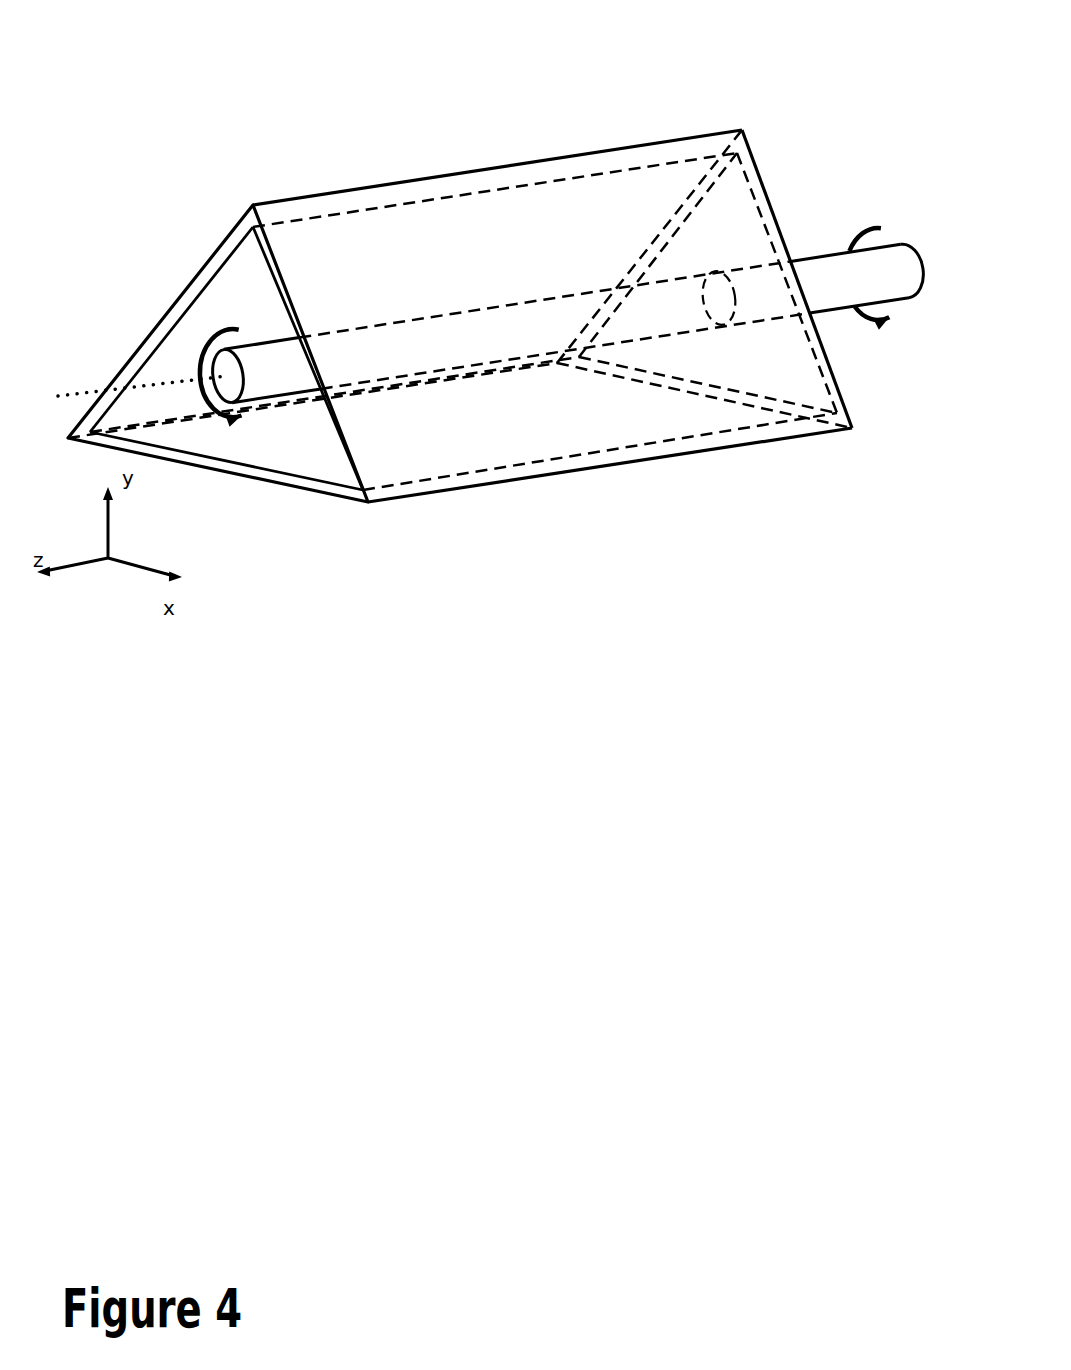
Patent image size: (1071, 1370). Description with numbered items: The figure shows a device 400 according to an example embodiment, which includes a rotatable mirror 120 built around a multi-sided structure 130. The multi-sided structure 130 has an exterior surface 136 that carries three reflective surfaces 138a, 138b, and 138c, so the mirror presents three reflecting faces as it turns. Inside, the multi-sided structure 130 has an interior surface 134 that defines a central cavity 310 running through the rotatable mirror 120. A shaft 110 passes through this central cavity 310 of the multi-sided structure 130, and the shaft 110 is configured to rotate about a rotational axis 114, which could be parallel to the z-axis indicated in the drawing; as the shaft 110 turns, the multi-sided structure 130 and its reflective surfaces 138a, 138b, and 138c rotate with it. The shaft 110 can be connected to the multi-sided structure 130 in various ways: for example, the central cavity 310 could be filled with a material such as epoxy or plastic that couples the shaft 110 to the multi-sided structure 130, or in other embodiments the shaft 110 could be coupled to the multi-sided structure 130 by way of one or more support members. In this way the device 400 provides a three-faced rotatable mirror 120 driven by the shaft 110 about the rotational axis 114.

The device 400 is at (865, 92).
The rotatable mirror 120 is at (492, 128).
The multi-sided structure 130 is at (437, 175).
The exterior surface 136 is at (162, 317).
The reflective surface 138a is at (545, 193).
The reflective surface 138b is at (200, 248).
The reflective surface 138c is at (302, 500).
The interior surface 134 is at (253, 440).
The central cavity 310 is at (168, 362).
The rotational axis 114 is at (88, 390).
The shaft 110 is at (280, 340).